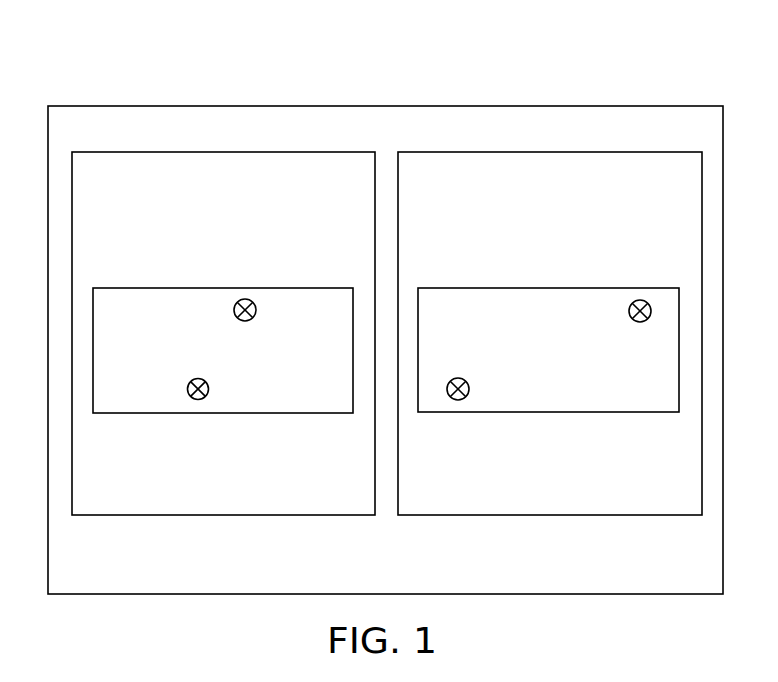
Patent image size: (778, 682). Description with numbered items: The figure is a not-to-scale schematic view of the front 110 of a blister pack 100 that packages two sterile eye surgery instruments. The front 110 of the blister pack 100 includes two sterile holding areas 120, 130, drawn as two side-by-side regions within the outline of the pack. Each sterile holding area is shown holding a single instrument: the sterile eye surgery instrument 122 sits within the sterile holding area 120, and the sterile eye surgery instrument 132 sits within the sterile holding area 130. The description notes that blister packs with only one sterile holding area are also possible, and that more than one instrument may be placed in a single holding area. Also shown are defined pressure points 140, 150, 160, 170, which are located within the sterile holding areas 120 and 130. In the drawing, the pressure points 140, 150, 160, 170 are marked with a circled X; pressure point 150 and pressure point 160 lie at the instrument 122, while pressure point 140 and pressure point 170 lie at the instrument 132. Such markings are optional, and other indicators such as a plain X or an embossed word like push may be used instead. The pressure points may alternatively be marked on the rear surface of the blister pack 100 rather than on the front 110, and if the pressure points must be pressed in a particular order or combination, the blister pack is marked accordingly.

The blister pack 100 is at (187, 55).
The front 110 is at (596, 98).
The sterile holding area 120 is at (217, 524).
The sterile eye surgery instrument 122 is at (135, 279).
The sterile holding area 130 is at (554, 524).
The sterile eye surgery instrument 132 is at (460, 278).
The pressure point 140 is at (641, 300).
The pressure point 150 is at (247, 298).
The pressure point 160 is at (199, 400).
The pressure point 170 is at (462, 400).